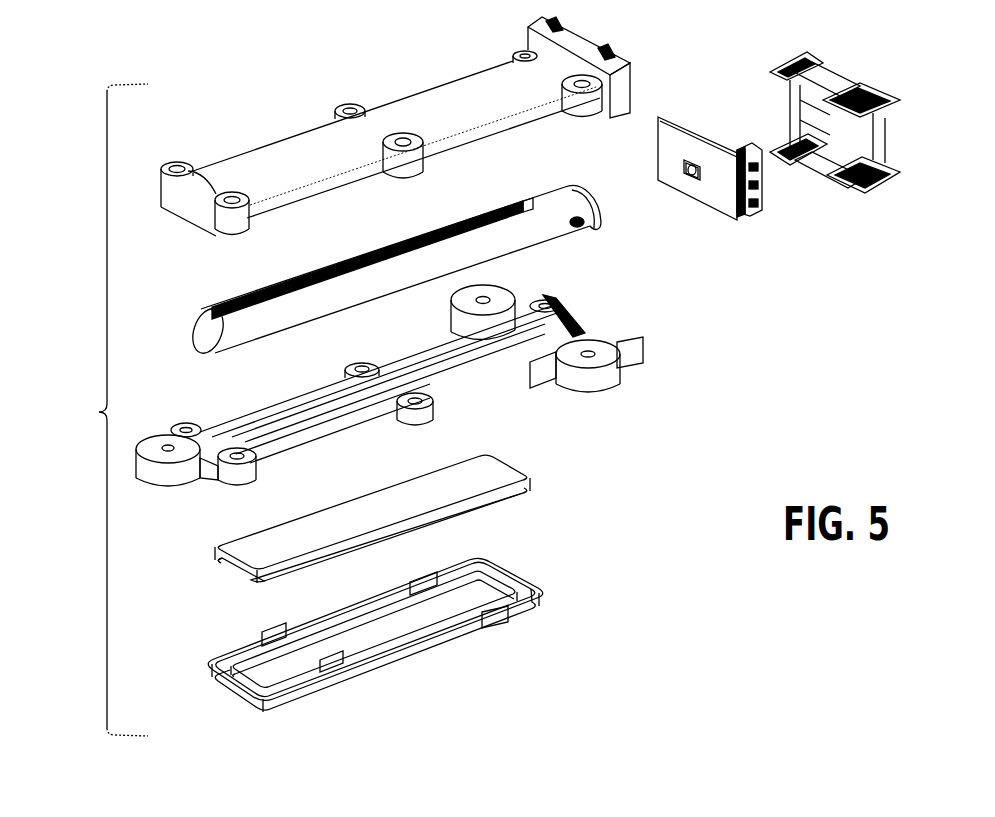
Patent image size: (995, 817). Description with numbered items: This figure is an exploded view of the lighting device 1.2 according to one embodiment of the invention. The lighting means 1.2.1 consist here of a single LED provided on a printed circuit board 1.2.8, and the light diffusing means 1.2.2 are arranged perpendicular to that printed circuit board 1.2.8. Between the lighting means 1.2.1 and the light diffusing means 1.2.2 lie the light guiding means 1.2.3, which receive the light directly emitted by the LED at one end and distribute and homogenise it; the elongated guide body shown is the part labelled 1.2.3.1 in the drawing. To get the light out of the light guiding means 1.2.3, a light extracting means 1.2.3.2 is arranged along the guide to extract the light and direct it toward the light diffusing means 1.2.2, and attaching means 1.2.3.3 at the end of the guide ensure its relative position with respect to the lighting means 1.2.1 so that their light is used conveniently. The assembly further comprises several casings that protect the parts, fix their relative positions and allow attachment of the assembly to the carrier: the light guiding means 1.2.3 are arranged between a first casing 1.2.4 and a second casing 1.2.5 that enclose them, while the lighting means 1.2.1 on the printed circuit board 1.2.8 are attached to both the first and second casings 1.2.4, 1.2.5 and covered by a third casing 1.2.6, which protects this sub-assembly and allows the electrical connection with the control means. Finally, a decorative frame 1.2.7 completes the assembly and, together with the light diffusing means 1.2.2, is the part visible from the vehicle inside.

The lighting device 1.2 is at (81, 410).
The lighting means 1.2.1 is at (690, 173).
The light diffusing means 1.2.2 is at (487, 477).
The light guiding means 1.2.3 is at (407, 264).
The spindle 1.2.3.1 is at (200, 333).
The light extracting means 1.2.3.2 is at (228, 302).
The attaching means 1.2.3.3 is at (596, 228).
The first casing 1.2.4 is at (432, 108).
The second casing 1.2.5 is at (630, 340).
The third casing 1.2.6 is at (840, 83).
The decorative frame 1.2.7 is at (540, 593).
The printed circuit board 1.2.8 is at (677, 143).